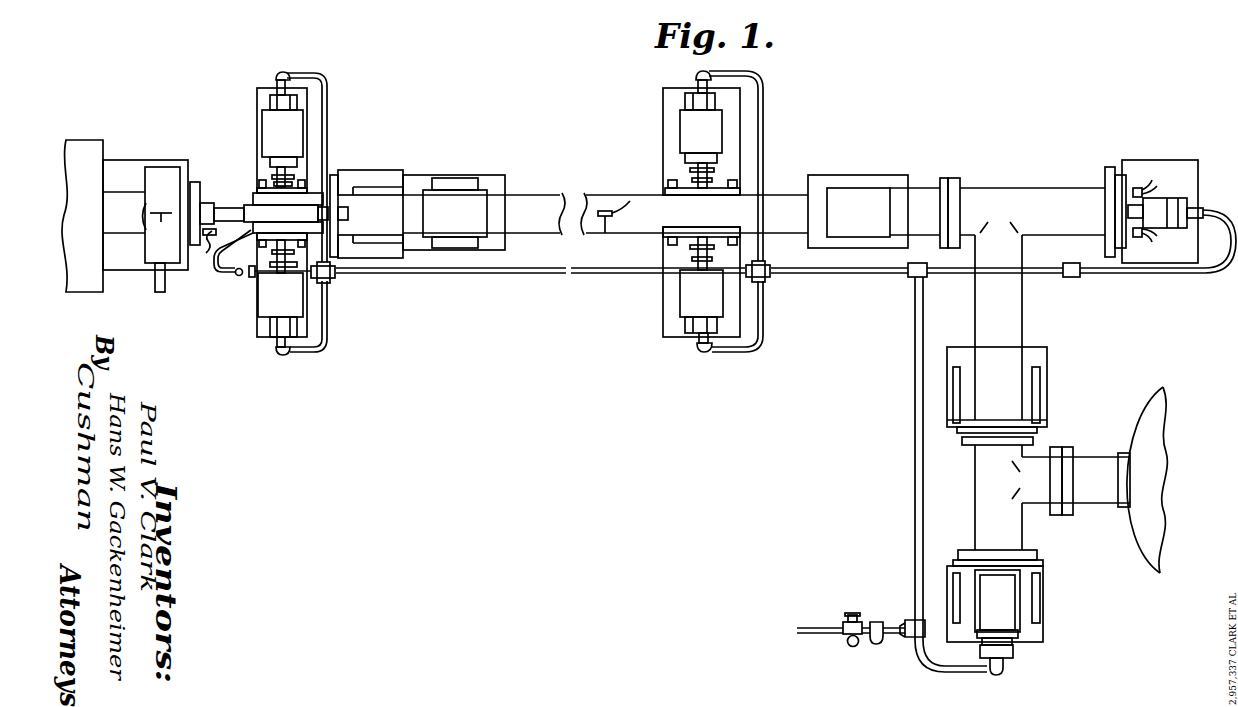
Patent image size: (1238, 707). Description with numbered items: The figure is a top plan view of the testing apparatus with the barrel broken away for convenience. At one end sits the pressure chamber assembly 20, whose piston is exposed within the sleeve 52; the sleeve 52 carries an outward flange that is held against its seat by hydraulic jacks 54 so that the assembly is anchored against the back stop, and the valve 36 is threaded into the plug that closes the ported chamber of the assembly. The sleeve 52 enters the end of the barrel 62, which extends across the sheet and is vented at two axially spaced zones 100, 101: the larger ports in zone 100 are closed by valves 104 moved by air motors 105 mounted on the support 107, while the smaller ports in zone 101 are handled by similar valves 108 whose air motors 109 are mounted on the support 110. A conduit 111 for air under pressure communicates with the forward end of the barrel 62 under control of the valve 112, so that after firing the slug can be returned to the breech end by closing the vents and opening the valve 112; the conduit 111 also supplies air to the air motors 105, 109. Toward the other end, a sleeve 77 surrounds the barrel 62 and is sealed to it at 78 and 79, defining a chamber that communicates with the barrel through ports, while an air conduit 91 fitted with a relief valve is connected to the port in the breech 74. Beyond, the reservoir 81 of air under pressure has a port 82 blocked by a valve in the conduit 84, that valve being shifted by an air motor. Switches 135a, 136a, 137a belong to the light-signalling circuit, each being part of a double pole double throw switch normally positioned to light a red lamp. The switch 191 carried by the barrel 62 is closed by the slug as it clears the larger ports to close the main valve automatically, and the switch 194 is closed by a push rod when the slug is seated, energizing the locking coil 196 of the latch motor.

The pressure chamber assembly 20 is at (170, 152).
The valve 36 is at (162, 215).
The sleeve 52 is at (222, 200).
The hydraulic jacks 54 is at (262, 212).
The barrel 62 is at (572, 198).
The breech 74 is at (1142, 188).
The sleeve 77 is at (1052, 188).
The seal 78 is at (950, 178).
The seal 79 is at (1108, 170).
The reservoir 81 is at (1150, 410).
The port 82 is at (1100, 505).
The conduit 84 is at (1015, 326).
The air conduit 91 is at (1147, 276).
The vent zone 100 is at (735, 201).
The vent zone 101 is at (303, 202).
The valve 104 is at (681, 218).
The air motor 105 is at (690, 131).
The support 107 is at (673, 333).
The valve 108 is at (318, 186).
The air motor 109 is at (297, 126).
The support 110 is at (262, 126).
The conduit 111 is at (390, 278).
The valve 112 is at (236, 276).
The switch 135a is at (1157, 163).
The switch 136a is at (700, 169).
The switch 137a is at (283, 178).
The switch 191 is at (605, 222).
The switch 194 is at (1147, 237).
The locking coil 196 is at (1173, 198).